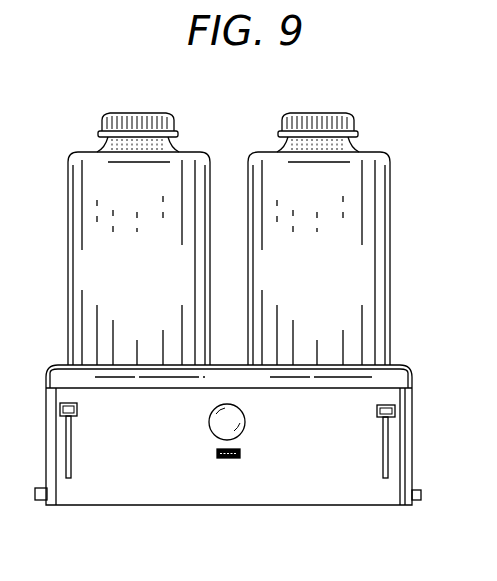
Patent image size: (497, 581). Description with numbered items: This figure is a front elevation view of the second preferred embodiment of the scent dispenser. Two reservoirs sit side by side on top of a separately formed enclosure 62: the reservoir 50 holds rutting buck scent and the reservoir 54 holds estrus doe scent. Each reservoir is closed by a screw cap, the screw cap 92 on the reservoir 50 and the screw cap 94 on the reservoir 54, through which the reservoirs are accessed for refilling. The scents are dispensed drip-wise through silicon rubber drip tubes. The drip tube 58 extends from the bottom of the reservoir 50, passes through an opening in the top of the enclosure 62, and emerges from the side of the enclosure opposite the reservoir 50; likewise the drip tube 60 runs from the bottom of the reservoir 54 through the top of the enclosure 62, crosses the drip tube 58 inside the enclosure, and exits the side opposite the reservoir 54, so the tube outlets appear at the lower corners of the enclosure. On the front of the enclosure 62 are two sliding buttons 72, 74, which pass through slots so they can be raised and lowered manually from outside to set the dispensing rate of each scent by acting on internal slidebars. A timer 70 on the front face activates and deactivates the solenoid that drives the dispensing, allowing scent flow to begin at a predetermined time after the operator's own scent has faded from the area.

The reservoir 50 is at (71, 162).
The reservoir 54 is at (388, 168).
The screw cap 92 is at (163, 118).
The screw cap 94 is at (337, 118).
The enclosure 62 is at (398, 372).
The timer 70 is at (243, 423).
The sliding button 72 is at (78, 413).
The sliding button 74 is at (396, 416).
The drip tube 60 is at (40, 500).
The drip tube 58 is at (413, 501).